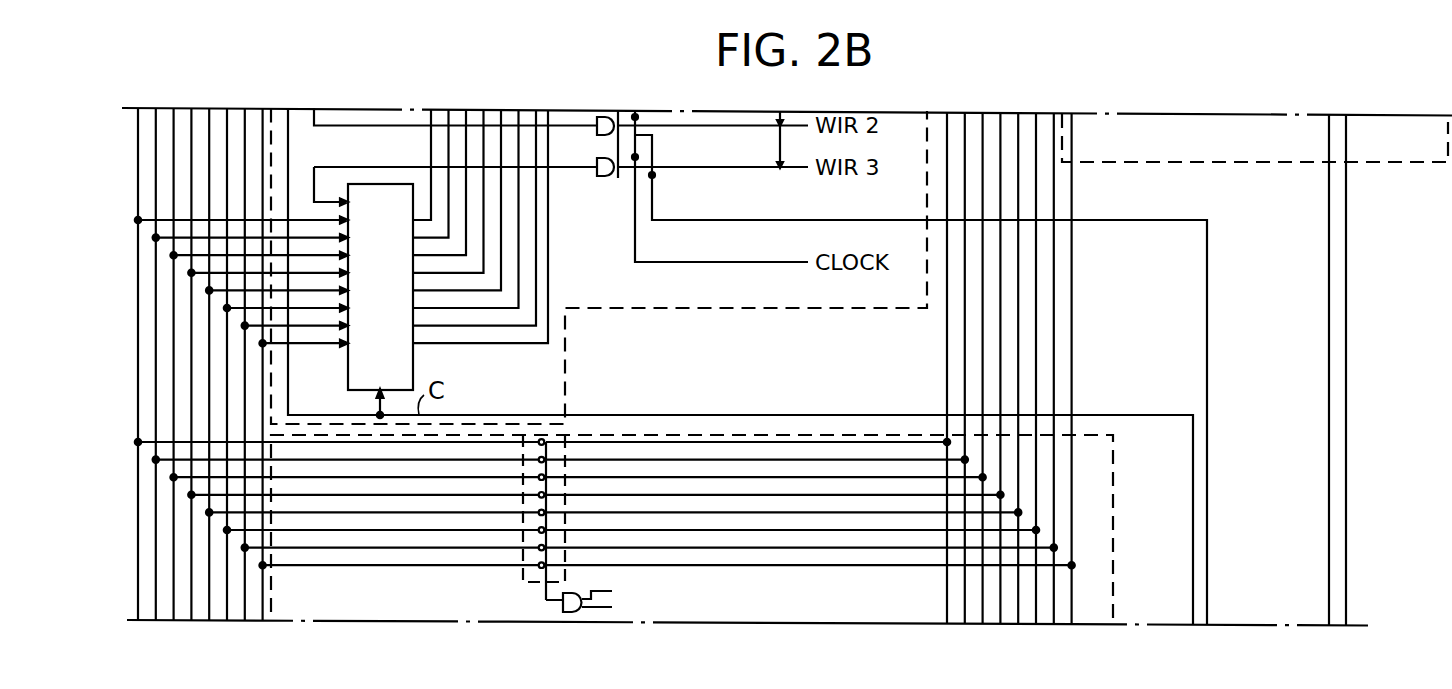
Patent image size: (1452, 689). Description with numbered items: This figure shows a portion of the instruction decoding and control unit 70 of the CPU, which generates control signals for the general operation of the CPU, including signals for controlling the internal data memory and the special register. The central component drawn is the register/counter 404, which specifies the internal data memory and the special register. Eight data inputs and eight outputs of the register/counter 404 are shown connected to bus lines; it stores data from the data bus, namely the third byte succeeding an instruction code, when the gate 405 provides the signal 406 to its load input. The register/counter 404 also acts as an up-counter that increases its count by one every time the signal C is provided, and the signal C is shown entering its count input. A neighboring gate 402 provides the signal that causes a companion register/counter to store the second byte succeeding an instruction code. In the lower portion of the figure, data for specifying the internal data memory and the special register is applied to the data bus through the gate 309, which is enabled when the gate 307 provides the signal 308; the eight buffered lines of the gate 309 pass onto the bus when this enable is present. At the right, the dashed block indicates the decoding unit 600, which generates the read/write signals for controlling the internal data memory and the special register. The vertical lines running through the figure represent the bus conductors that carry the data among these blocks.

The instruction decoding and control unit 70 is at (1297, 410).
The gate 307 is at (577, 585).
The signal 308 is at (559, 598).
The gate 309 is at (523, 580).
The gate 402 is at (604, 137).
The register/counter 404 is at (413, 365).
The gate 405 is at (600, 176).
The signal 406 is at (334, 167).
The decoding unit 600 is at (1388, 162).